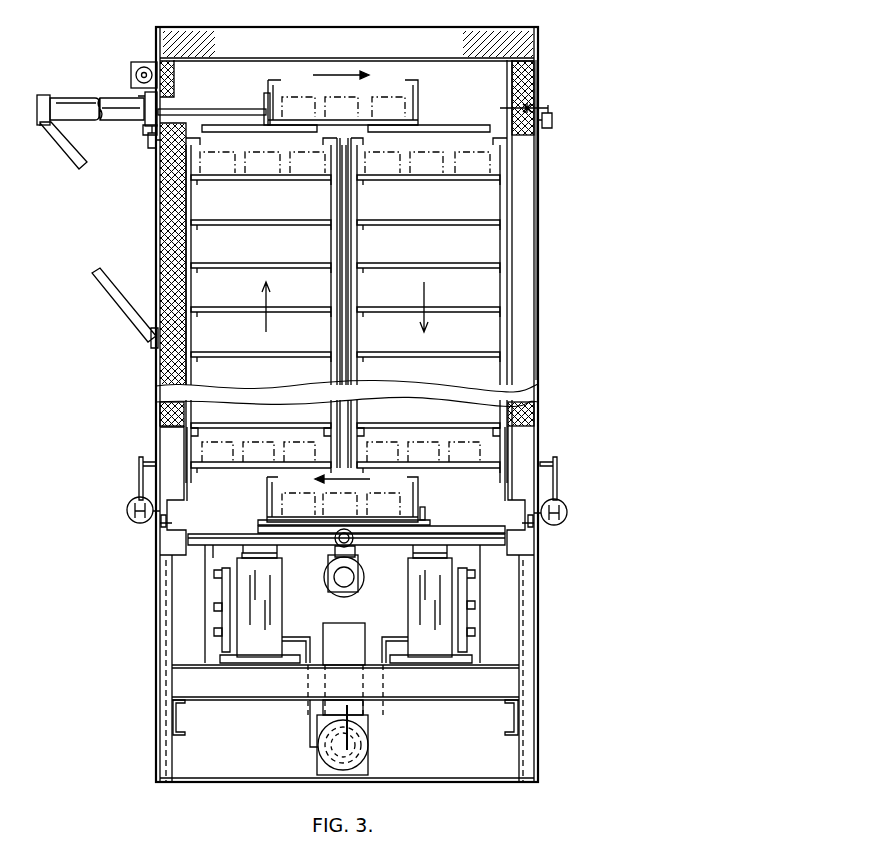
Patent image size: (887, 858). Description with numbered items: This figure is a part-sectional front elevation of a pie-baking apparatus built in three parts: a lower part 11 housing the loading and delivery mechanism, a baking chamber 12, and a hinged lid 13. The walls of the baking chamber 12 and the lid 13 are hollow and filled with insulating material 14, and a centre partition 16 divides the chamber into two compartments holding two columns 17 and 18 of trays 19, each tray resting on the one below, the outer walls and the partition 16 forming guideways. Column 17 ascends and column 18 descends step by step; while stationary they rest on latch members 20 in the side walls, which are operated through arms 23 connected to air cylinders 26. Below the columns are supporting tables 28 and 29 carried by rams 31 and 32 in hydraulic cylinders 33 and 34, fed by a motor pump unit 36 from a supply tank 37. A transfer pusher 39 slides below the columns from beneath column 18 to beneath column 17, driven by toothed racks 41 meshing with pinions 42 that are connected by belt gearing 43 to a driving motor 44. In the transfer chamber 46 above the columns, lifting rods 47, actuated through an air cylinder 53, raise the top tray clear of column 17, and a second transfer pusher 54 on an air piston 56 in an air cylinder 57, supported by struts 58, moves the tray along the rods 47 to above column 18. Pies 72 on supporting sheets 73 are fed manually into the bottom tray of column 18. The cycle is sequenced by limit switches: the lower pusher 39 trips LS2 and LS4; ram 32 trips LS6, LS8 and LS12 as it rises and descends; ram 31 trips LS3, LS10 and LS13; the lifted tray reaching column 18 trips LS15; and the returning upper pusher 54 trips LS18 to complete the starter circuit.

The lower part 11 is at (160, 601).
The baking chamber 12 is at (538, 291).
The hinged lid 13 is at (538, 33).
The insulating material 14 is at (166, 46).
The centre partition 16 is at (345, 243).
The column 17 is at (232, 375).
The column 18 is at (455, 375).
The tray 19 is at (420, 91).
The latch member 20 is at (328, 430).
The arm 23 is at (139, 480).
The air cylinder 26 is at (130, 513).
The supporting table 28 is at (258, 540).
The supporting table 29 is at (432, 541).
The ram 31 is at (278, 558).
The ram 32 is at (420, 556).
The hydraulic cylinder 33 is at (262, 646).
The hydraulic cylinder 34 is at (415, 636).
The motor pump unit 36 is at (357, 751).
The supply tank 37 is at (335, 637).
The transfer pusher 39 is at (428, 520).
The toothed rack 41 is at (272, 525).
The pinion 42 is at (344, 529).
The belt gearing 43 is at (338, 557).
The driving motor 44 is at (343, 598).
The transfer chamber 46 is at (472, 80).
The rod 47 is at (243, 133).
The air cylinder 53 is at (137, 68).
The transfer pusher 54 is at (265, 101).
The air piston 56 is at (192, 109).
The air cylinder 57 is at (82, 98).
The strut 58 is at (72, 153).
The pie 72 is at (300, 98).
The supporting sheet 73 is at (448, 264).
The limit switch LS2 is at (160, 528).
The limit switch LS3 is at (220, 607).
The limit switch LS4 is at (534, 547).
The limit switch LS6 is at (473, 577).
The limit switch LS8 is at (473, 605).
The limit switch LS10 is at (220, 575).
The limit switch LS12 is at (473, 632).
The limit switch LS13 is at (220, 632).
The limit switch LS15 is at (548, 130).
The limit switch LS18 is at (148, 146).